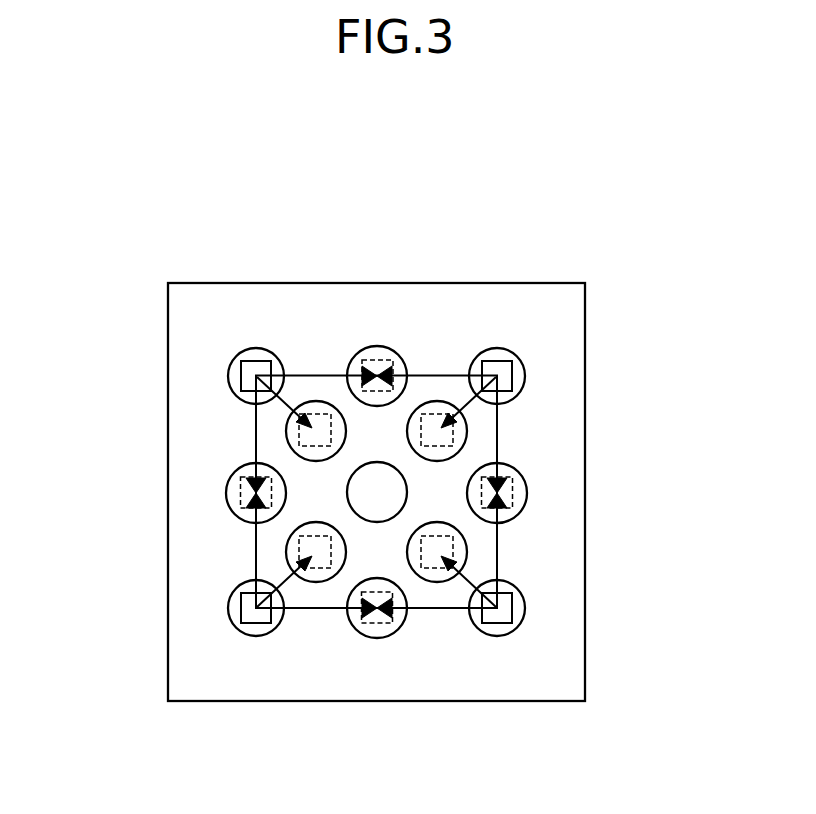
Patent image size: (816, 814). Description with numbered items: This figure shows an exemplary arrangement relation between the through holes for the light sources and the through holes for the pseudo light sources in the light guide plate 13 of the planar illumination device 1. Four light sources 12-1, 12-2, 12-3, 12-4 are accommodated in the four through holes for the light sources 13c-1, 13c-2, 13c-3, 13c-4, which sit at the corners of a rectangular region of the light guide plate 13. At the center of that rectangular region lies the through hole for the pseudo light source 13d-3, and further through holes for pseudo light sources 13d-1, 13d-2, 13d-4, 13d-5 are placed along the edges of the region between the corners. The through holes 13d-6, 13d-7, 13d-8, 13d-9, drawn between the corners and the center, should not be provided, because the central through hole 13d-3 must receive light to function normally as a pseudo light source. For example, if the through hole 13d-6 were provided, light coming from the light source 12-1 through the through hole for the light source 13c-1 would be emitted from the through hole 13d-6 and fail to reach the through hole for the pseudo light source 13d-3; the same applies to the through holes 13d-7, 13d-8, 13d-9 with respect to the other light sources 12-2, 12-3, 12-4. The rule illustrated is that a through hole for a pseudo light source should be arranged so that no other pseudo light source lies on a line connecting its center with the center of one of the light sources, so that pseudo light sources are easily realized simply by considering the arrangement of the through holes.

The planar illumination device 1 is at (600, 179).
The light guide plate 13 is at (568, 325).
The light source 12-1 is at (262, 367).
The light source 12-2 is at (502, 368).
The light source 12-3 is at (245, 608).
The light source 12-4 is at (510, 610).
The through hole for the light source 13c-1 is at (229, 382).
The through hole for the light source 13c-2 is at (522, 380).
The through hole for the light source 13c-3 is at (257, 636).
The through hole for the light source 13c-4 is at (497, 636).
The through hole for the pseudo light source 13d-1 is at (383, 350).
The through hole for the pseudo light source 13d-2 is at (229, 489).
The through hole for the pseudo light source 13d-3 is at (404, 497).
The through hole for the pseudo light source 13d-4 is at (522, 497).
The through hole for the pseudo light source 13d-5 is at (377, 636).
The through hole 13d-6 is at (325, 403).
The through hole 13d-7 is at (444, 403).
The through hole 13d-8 is at (315, 582).
The through hole 13d-9 is at (437, 582).